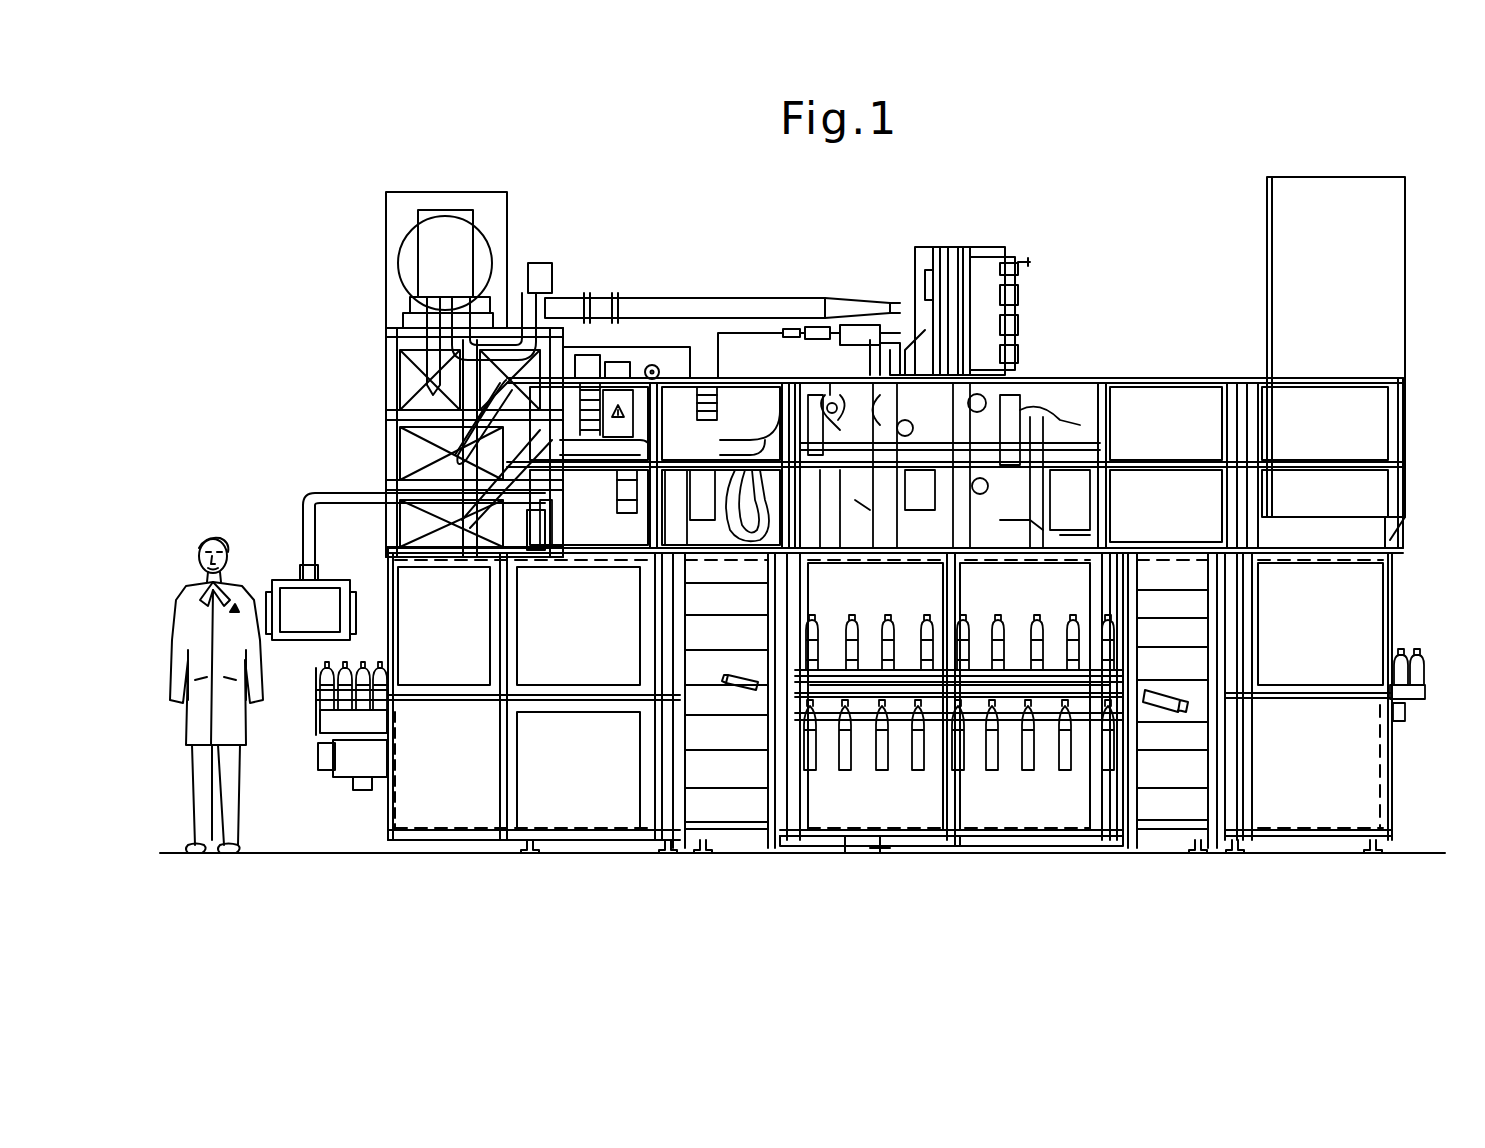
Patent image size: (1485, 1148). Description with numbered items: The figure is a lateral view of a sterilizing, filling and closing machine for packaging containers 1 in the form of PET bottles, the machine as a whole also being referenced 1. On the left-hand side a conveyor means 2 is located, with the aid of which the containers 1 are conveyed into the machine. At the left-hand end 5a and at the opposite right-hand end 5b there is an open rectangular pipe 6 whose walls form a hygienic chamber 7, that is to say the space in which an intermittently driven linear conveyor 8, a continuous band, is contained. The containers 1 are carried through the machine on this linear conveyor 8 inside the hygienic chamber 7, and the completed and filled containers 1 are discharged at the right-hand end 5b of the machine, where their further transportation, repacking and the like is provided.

The packaging container 1 is at (319, 682).
The conveyor means 2 is at (317, 733).
The left-hand end 5a is at (636, 784).
The right-hand end 5b is at (1253, 772).
The open rectangular pipe 6 is at (896, 842).
The hygienic chamber 7 is at (1027, 803).
The linear conveyor 8 is at (865, 725).